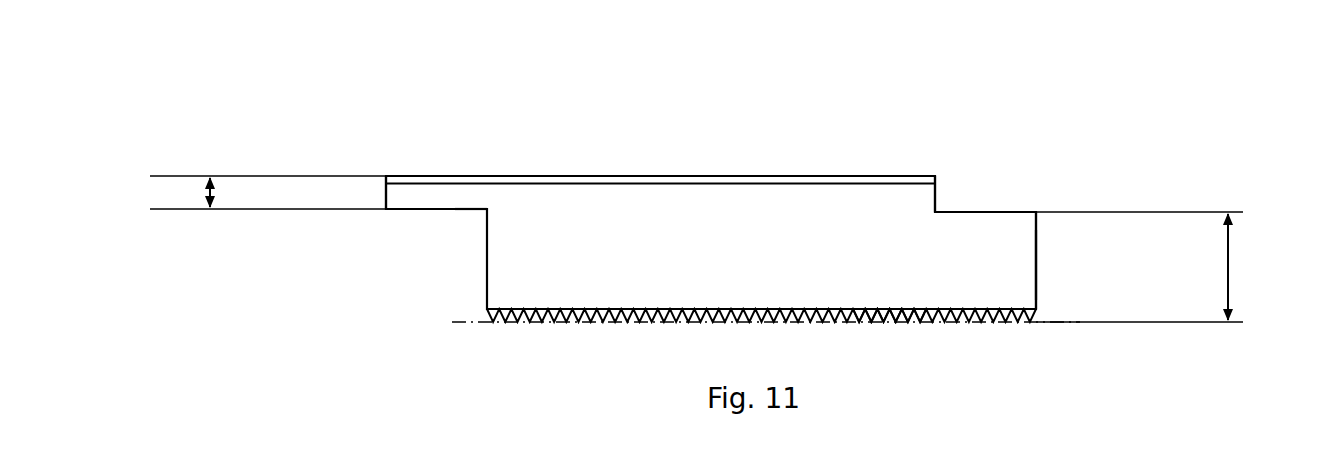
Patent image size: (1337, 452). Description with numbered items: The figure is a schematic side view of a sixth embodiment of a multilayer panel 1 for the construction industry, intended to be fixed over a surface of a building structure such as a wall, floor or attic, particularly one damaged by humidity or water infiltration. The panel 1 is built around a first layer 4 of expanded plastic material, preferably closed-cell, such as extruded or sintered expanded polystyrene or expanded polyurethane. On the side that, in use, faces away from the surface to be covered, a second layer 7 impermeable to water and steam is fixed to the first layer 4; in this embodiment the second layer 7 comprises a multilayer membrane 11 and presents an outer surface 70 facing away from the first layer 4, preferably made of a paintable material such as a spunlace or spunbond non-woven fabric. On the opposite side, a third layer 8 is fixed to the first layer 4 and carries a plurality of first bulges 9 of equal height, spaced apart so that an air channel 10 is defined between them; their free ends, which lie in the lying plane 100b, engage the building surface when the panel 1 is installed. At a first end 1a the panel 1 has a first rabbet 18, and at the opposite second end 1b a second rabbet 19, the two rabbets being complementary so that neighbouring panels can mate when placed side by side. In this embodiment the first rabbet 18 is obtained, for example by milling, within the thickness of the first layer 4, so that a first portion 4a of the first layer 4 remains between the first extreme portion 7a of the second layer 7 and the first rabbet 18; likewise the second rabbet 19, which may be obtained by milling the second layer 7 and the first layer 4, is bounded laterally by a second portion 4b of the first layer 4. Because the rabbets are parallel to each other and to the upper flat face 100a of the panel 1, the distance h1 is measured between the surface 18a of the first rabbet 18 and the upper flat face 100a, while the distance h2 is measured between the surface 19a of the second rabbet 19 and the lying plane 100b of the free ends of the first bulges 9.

The multilayer panel 1 is at (800, 118).
The first end 1a is at (382, 188).
The second end 1b is at (1040, 247).
The first layer 4 is at (1008, 280).
The first portion of the first layer 4a is at (414, 207).
The second portion of the first layer 4b is at (941, 198).
The second layer 7 is at (645, 174).
The first extreme portion of the second layer 7a is at (410, 174).
The third layer 8 is at (1038, 316).
The first bulges 9 is at (625, 325).
The air channel 10 is at (872, 325).
The multilayer membrane 11 is at (548, 177).
The first rabbet 18 is at (470, 213).
The surface of the first rabbet 18a is at (437, 213).
The second rabbet 19 is at (1013, 210).
The surface of the second rabbet 19a is at (977, 210).
The outer surface 70 is at (778, 173).
The upper flat face 100a is at (880, 174).
The lying plane of the free ends of the first bulges 100b is at (447, 324).
The distance h1 is at (268, 193).
The distance h2 is at (1157, 267).